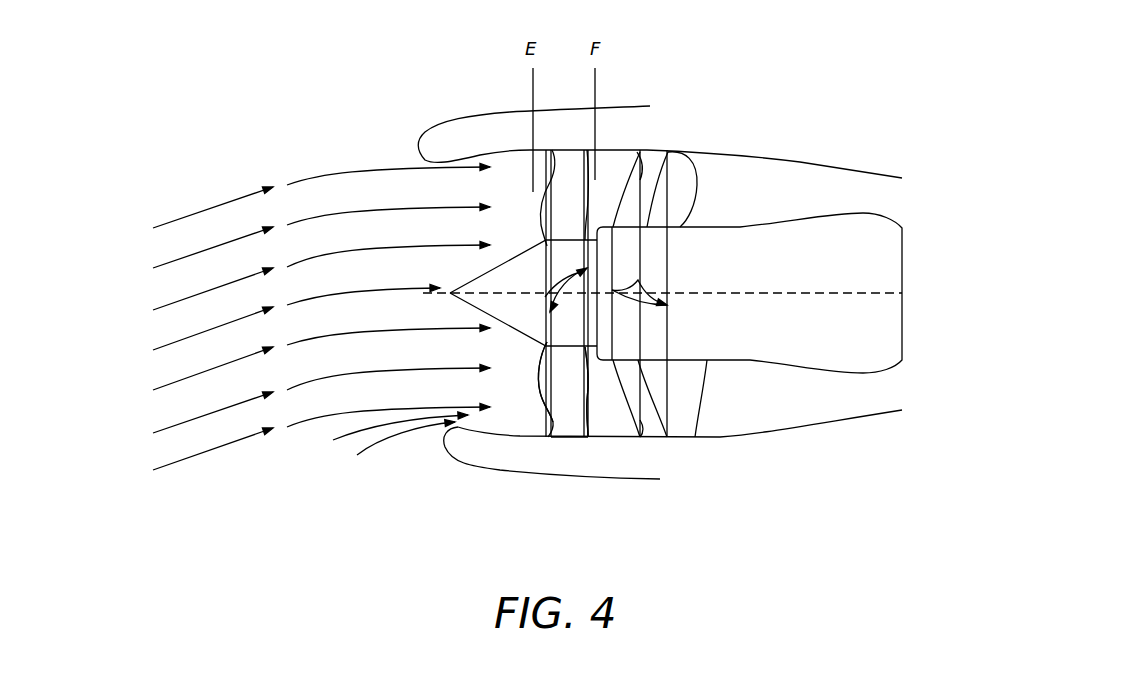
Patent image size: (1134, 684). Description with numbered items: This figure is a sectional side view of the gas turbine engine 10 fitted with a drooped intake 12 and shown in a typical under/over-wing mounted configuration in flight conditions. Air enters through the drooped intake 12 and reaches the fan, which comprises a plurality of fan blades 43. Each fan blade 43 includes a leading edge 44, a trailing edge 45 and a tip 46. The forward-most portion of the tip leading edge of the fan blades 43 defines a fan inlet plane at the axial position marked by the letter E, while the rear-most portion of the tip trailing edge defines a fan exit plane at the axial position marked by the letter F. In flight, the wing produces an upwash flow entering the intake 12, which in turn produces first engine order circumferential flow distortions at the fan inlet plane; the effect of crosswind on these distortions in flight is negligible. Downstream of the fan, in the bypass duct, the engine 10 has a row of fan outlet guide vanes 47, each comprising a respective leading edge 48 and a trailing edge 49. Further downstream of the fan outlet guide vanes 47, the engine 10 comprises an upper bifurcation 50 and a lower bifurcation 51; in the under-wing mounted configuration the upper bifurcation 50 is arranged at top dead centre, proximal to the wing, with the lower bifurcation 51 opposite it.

The gas turbine engine 10 is at (768, 105).
The drooped intake 12 is at (440, 198).
The fan blade 43 is at (584, 396).
The leading edge 44 is at (552, 417).
The trailing edge 45 is at (588, 405).
The tip 46 is at (572, 437).
The fan outlet guide vane 47 is at (650, 167).
The leading edge 48 is at (641, 428).
The trailing edge 49 is at (657, 410).
The upper bifurcation 50 is at (758, 202).
The lower bifurcation 51 is at (762, 399).